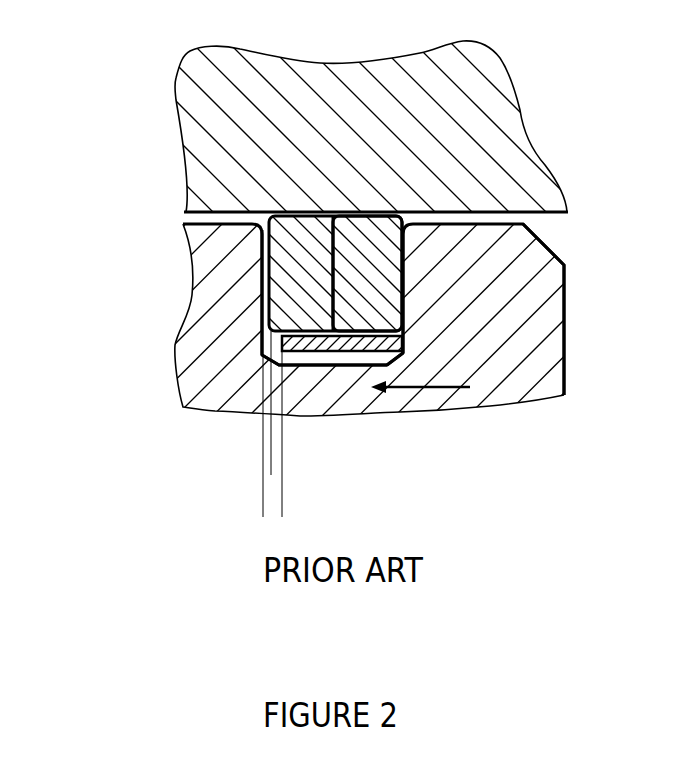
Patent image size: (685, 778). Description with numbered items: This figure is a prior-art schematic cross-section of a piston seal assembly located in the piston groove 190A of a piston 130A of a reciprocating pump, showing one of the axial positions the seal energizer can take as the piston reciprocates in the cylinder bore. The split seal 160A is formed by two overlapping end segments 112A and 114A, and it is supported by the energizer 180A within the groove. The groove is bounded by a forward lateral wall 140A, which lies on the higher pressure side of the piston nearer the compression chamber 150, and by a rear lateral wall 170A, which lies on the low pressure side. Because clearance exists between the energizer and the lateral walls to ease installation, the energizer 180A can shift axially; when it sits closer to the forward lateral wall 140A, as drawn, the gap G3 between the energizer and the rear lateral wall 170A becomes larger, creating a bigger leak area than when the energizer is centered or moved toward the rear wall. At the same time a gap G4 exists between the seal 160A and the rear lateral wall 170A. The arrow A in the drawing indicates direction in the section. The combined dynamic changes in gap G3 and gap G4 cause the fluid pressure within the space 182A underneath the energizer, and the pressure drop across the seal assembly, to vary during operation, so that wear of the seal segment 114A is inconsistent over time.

The split seal 160A is at (343, 212).
The compression chamber 150 is at (632, 263).
The overlapping end segment 114A is at (312, 267).
The overlapping end segment 112A is at (362, 249).
The rear lateral wall 170A is at (262, 293).
The seal energizer 180A is at (297, 342).
The piston groove 190A is at (322, 370).
The space underneath the energizer 182A is at (363, 357).
The forward lateral wall 140A is at (404, 283).
The piston 130A is at (527, 352).
The direction arrow A is at (420, 371).
The gap G4 is at (283, 455).
The gap G3 is at (237, 497).